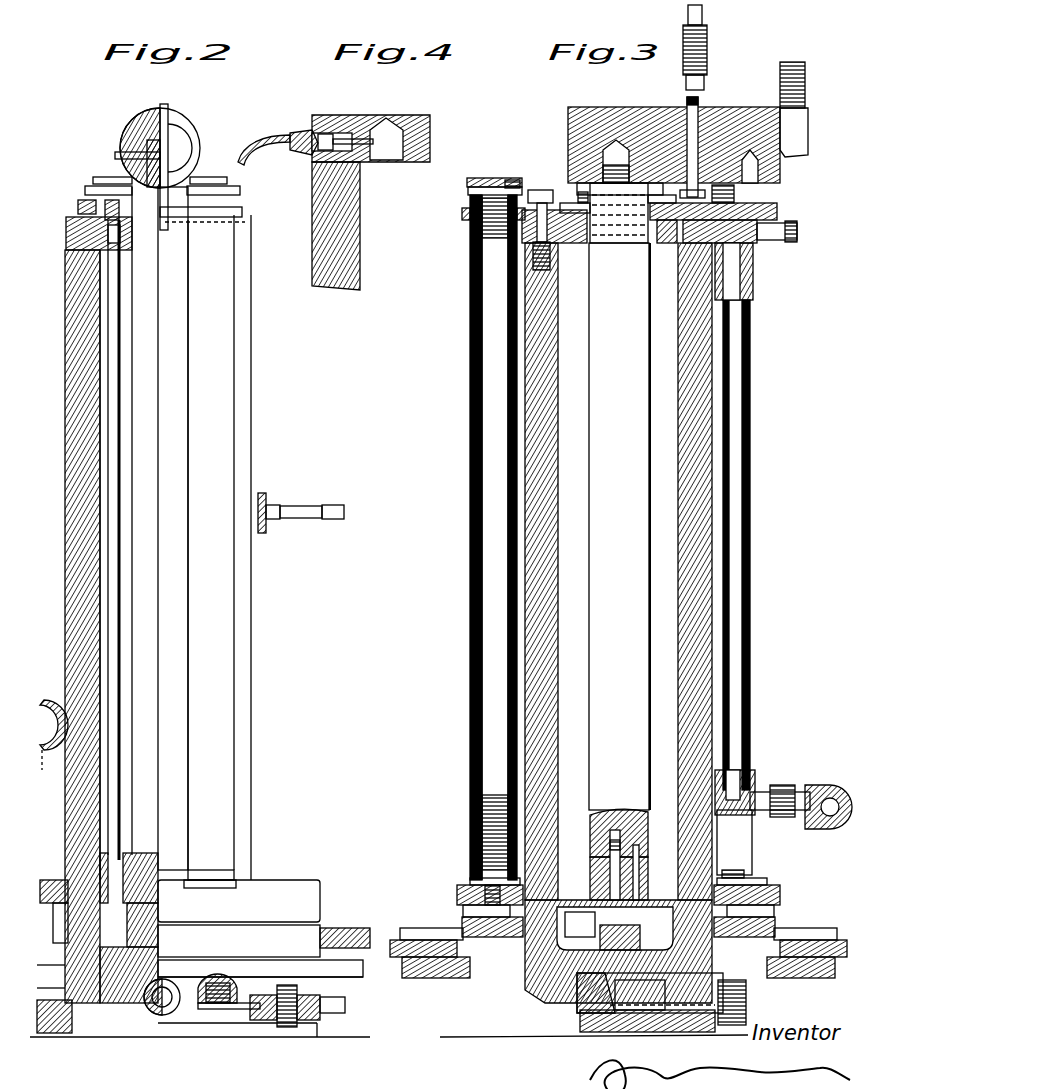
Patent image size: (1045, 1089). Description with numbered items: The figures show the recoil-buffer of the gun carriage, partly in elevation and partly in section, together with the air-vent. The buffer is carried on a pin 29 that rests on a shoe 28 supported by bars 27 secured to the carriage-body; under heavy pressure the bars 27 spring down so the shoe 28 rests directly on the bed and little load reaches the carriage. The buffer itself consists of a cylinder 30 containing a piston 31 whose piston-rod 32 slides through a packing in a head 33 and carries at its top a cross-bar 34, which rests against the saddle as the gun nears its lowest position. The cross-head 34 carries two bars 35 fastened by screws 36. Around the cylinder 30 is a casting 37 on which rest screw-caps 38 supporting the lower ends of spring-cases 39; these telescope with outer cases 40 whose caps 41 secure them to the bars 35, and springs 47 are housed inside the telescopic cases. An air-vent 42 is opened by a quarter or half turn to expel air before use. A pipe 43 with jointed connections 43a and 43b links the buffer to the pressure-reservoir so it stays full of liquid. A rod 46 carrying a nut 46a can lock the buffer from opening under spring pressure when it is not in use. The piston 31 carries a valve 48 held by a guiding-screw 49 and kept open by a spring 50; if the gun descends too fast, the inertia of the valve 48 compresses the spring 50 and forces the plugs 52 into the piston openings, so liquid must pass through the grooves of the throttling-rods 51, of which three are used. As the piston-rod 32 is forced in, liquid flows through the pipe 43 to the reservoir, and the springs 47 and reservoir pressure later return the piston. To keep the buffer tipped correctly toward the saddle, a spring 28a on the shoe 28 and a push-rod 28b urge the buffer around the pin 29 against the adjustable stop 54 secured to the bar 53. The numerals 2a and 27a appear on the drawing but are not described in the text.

In FIG. 3, the spindle block 2a is at (795, 109).
In FIG. 2, the bars 27 is at (305, 1014).
In FIG. 2, the screw head 27a is at (345, 1005).
In FIG. 2, the shoe 28 is at (217, 1004).
In FIG. 2, the spring 28a is at (208, 1010).
In FIG. 2, the push-rod 28b is at (292, 512).
In FIG. 2, the pin 29 is at (155, 1008).
In FIG. 3, the pin 29 is at (637, 995).
In FIG. 2, the buffer cylinder 30 is at (68, 626).
In FIG. 4, the buffer cylinder 30 is at (356, 226).
In FIG. 3, the buffer cylinder 30 is at (684, 540).
In FIG. 3, the piston 31 is at (658, 868).
In FIG. 2, the piston-rod 32 is at (184, 537).
In FIG. 3, the piston-rod 32 is at (619, 526).
In FIG. 2, the head 33 is at (67, 235).
In FIG. 4, the head 33 is at (414, 163).
In FIG. 3, the head 33 is at (556, 230).
In FIG. 3, the cross-bar 34 is at (645, 100).
In FIG. 3, the bars 35 is at (515, 178).
In FIG. 3, the screws 36 is at (494, 178).
In FIG. 2, the casting 37 is at (300, 878).
In FIG. 3, the casting 37 is at (765, 895).
In FIG. 3, the screw-caps 38 is at (466, 884).
In FIG. 3, the spring-cases 39 is at (509, 735).
In FIG. 3, the outer cases 40 is at (472, 700).
In FIG. 3, the caps 41 is at (485, 177).
In FIG. 4, the air-vent 42 is at (300, 130).
In FIG. 3, the pipe 43 is at (752, 555).
In FIG. 3, the jointed connection 43a is at (755, 255).
In FIG. 3, the jointed connection 43b is at (820, 784).
In FIG. 3, the rod 46 is at (700, 104).
In FIG. 3, the nut 46a is at (716, 47).
In FIG. 3, the springs 47 is at (490, 240).
In FIG. 3, the valve 48 is at (660, 975).
In FIG. 3, the guiding-screw 49 is at (596, 860).
In FIG. 3, the spring 50 is at (585, 935).
In FIG. 2, the throttling-rods 51 is at (121, 575).
In FIG. 3, the plugs 52 is at (565, 918).
In FIG. 2, the bar 53 is at (42, 708).
In FIG. 2, the adjustable stop 54 is at (47, 775).